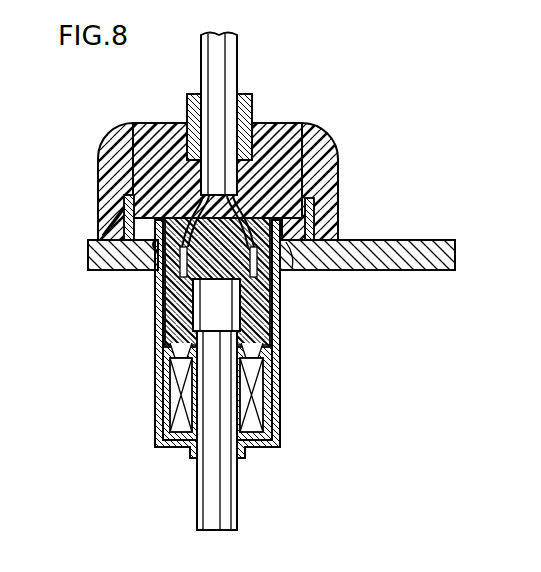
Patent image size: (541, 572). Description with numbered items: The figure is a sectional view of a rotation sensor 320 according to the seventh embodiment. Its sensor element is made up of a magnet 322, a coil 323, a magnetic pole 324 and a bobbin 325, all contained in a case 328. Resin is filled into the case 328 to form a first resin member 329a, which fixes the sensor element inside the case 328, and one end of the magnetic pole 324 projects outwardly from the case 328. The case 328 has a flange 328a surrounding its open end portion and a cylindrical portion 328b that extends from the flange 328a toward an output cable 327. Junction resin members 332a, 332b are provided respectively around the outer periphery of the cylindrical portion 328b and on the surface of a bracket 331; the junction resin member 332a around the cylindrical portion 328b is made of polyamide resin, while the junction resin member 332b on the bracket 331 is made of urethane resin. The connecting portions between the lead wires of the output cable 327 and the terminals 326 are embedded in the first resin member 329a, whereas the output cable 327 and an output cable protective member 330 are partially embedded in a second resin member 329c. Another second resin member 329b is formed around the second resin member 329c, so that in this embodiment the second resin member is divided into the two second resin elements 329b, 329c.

The rotation sensor 320 is at (360, 108).
The magnet 322 is at (203, 315).
The coil 323 is at (258, 386).
The magnetic pole 324 is at (222, 490).
The bobbin 325 is at (282, 312).
The terminals 326 is at (158, 253).
The output cable 327 is at (238, 41).
The case 328 is at (170, 376).
The flange 328a is at (300, 268).
The cylindrical portion 328b is at (303, 190).
The first resin member 329a is at (312, 224).
The second resin member 329b is at (312, 152).
The second resin member 329c is at (180, 135).
The output cable protective member 330 is at (252, 96).
The bracket 331 is at (440, 258).
The junction resin member 332a is at (128, 200).
The junction resin member 332b is at (116, 232).